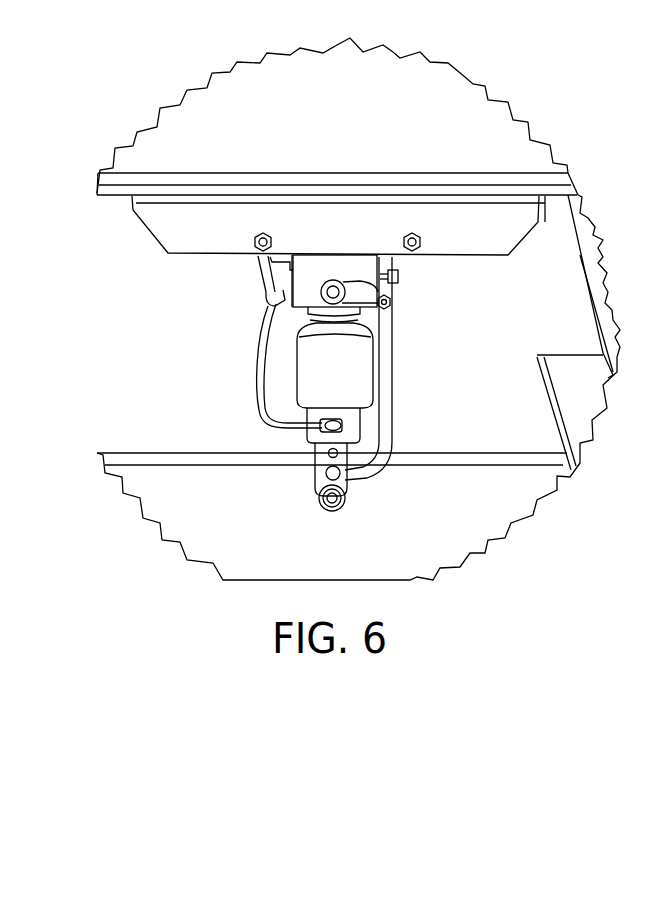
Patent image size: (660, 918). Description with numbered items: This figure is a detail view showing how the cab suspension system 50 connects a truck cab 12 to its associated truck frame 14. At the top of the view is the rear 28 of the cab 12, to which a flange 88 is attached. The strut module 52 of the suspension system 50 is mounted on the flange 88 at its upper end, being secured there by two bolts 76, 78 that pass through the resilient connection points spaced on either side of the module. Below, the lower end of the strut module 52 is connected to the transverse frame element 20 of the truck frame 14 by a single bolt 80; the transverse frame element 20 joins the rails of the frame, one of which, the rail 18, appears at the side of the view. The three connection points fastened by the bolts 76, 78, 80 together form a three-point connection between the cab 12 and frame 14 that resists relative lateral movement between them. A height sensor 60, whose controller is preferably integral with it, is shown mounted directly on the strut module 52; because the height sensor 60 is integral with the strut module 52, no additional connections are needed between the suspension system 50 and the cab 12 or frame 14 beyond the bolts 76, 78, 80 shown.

The truck cab 12 is at (438, 104).
The rear of the cab 28 is at (483, 156).
The flange 88 is at (306, 220).
The bolt 76 is at (255, 241).
The bolt 78 is at (420, 241).
The rail 18 is at (555, 362).
The suspension system 50 is at (208, 362).
The height sensor 60 is at (355, 282).
The strut module 52 is at (355, 382).
The bolt 80 is at (345, 502).
The transverse frame element 20 is at (230, 509).
The truck frame 14 is at (495, 520).